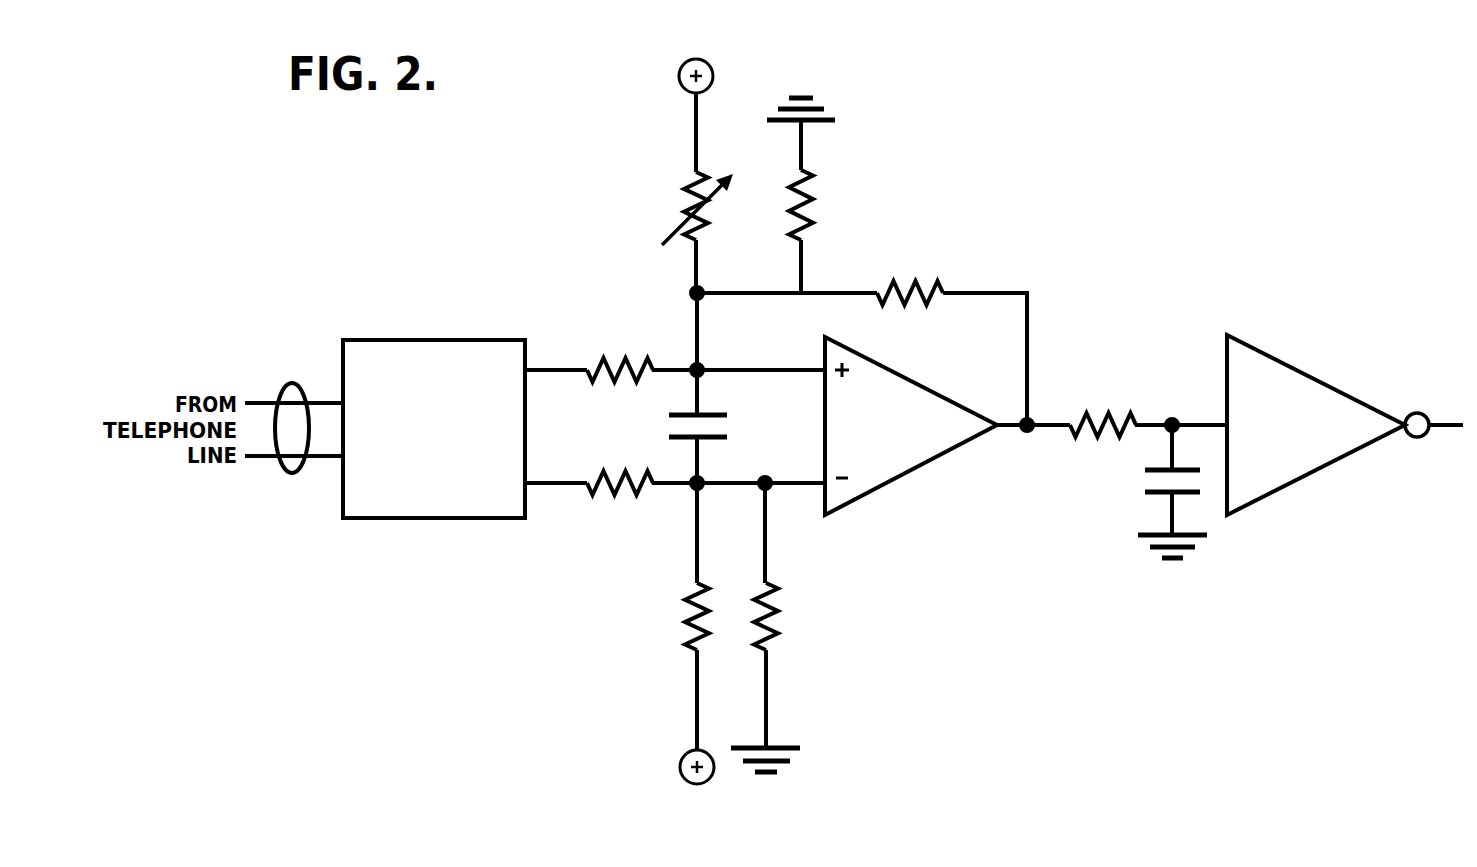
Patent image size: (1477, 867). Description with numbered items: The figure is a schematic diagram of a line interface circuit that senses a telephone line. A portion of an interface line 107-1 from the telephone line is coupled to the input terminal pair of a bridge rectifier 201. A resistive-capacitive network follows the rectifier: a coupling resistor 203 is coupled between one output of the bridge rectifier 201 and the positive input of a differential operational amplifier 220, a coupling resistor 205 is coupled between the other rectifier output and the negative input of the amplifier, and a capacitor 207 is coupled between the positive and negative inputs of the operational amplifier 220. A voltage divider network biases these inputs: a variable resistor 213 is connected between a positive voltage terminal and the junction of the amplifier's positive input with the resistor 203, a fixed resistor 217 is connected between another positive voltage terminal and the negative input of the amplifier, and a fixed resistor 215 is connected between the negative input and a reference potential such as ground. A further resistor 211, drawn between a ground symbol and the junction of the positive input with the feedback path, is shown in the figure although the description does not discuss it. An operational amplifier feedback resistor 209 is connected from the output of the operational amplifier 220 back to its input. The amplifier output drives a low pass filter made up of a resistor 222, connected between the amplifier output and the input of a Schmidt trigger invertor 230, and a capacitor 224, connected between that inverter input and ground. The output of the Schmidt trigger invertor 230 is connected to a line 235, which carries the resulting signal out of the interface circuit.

The interface line 107-1 is at (288, 384).
The bridge rectifier 201 is at (402, 340).
The coupling resistor 203 is at (600, 358).
The coupling resistor 205 is at (616, 496).
The capacitor 207 is at (724, 415).
The operational amplifier feedback resistor 209 is at (895, 282).
The resistor to ground 211 is at (813, 202).
The variable resistor 213 is at (690, 197).
The fixed resistor 215 is at (777, 623).
The fixed resistor 217 is at (690, 615).
The differential operational amplifier 220 is at (935, 460).
The resistor 222 is at (1113, 415).
The capacitor 224 is at (1152, 470).
The Schmidt trigger invertor 230 is at (1307, 373).
The line 235 is at (1448, 428).